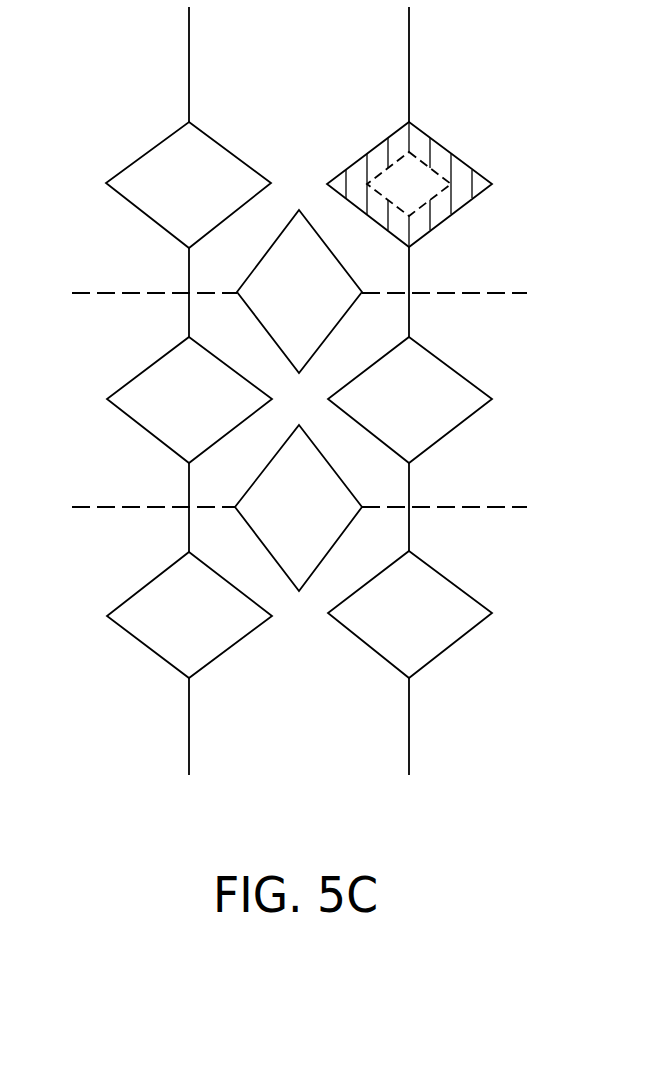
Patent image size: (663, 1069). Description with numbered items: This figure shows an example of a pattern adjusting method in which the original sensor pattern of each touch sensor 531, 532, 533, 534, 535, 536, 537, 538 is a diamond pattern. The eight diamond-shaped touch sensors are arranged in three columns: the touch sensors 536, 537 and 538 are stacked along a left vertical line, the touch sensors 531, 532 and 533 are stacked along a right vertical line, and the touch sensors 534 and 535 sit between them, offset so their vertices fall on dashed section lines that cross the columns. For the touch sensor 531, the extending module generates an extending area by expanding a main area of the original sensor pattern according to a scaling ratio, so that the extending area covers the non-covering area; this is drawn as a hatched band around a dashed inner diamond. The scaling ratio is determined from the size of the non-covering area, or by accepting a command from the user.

The touch sensor 531 is at (380, 140).
The touch sensor 532 is at (453, 367).
The touch sensor 533 is at (458, 585).
The touch sensor 534 is at (310, 205).
The touch sensor 535 is at (285, 578).
The touch sensor 536 is at (148, 150).
The touch sensor 537 is at (147, 367).
The touch sensor 538 is at (140, 643).